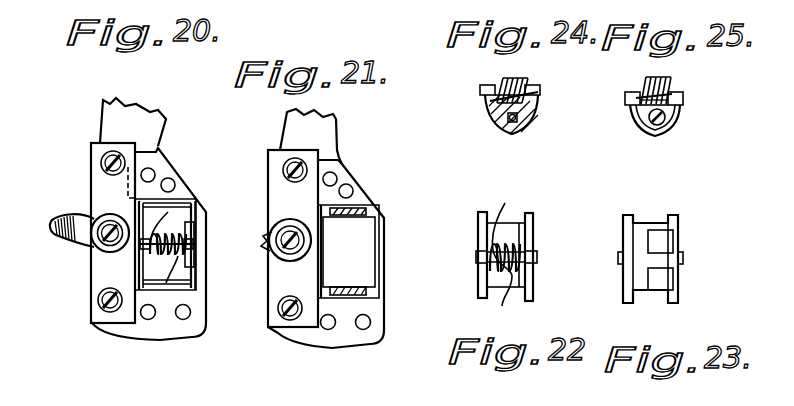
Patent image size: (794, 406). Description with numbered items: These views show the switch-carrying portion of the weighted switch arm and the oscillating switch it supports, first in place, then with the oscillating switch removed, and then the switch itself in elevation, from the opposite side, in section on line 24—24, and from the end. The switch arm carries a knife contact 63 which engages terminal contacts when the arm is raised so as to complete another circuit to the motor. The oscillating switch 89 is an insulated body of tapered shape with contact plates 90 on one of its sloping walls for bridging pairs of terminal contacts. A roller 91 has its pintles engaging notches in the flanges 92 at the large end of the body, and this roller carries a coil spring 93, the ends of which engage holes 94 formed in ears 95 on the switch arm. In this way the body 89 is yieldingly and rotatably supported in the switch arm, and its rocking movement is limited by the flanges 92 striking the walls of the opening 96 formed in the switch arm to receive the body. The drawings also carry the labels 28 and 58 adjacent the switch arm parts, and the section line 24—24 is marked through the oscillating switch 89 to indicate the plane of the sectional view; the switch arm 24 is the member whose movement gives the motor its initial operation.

In FIG. 23, the switch arm 24 is at (598, 244).
In FIG. 20, the section line 28- 28 is at (100, 163).
In FIG. 20, the arm 58 is at (107, 116).
In FIG. 21, the arm 58 is at (333, 127).
In FIG. 20, the knife contact 63 is at (53, 235).
In FIG. 20, the oscillating switch 89 is at (178, 268).
In FIG. 24, the oscillating switch 89 is at (508, 112).
In FIG. 25, the oscillating switch 89 is at (675, 119).
In FIG. 23, the oscillating switch 89 is at (665, 242).
In FIG. 24, the contact plates 90 is at (500, 131).
In FIG. 25, the contact plates 90 is at (638, 117).
In FIG. 23, the contact plates 90 is at (636, 238).
In FIG. 20, the roller 91 is at (192, 240).
In FIG. 24, the roller 91 is at (512, 96).
In FIG. 25, the roller 91 is at (668, 88).
In FIG. 22, the roller 91 is at (533, 256).
In FIG. 20, the flanges 92 is at (197, 290).
In FIG. 24, the flanges 92 is at (481, 85).
In FIG. 25, the flanges 92 is at (628, 100).
In FIG. 22, the flanges 92 is at (479, 216).
In FIG. 23, the flanges 92 is at (668, 211).
In FIG. 20, the coil spring 93 is at (180, 261).
In FIG. 24, the coil spring 93 is at (503, 80).
In FIG. 25, the coil spring 93 is at (656, 86).
In FIG. 22, the coil spring 93 is at (514, 252).
In FIG. 21, the holes 94 is at (350, 208).
In FIG. 20, the ears 95 is at (176, 204).
In FIG. 21, the ears 95 is at (356, 211).
In FIG. 21, the opening 96 is at (373, 223).